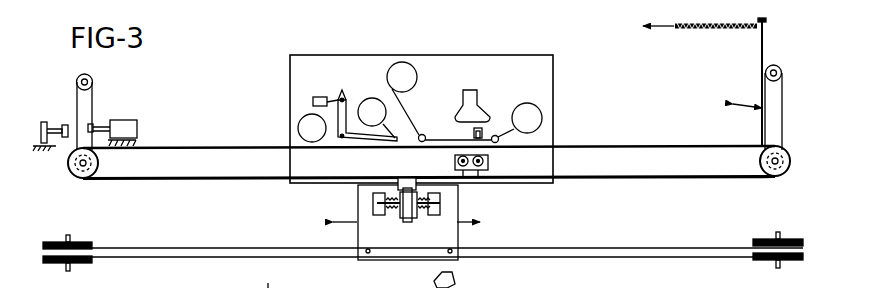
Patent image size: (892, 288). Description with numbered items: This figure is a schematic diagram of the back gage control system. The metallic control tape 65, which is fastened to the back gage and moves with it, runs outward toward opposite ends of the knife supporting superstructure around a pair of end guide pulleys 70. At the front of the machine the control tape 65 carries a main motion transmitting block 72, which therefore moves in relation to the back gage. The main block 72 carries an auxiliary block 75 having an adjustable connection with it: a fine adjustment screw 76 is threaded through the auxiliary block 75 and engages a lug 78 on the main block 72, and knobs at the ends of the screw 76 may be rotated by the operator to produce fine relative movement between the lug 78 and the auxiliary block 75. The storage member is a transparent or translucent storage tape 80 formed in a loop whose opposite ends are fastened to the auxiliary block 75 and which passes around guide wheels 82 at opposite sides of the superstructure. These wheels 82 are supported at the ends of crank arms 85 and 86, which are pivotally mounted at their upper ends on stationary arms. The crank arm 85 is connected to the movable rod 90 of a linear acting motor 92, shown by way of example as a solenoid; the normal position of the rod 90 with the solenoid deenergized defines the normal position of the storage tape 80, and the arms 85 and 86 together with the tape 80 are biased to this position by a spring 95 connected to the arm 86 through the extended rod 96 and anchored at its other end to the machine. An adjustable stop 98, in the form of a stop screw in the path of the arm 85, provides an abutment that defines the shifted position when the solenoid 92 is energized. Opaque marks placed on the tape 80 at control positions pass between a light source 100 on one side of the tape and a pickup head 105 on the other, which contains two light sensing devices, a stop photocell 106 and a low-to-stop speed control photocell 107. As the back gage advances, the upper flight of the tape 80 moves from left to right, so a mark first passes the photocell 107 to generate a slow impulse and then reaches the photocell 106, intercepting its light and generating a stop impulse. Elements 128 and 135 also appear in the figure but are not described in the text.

The control tape 65 is at (596, 250).
The end guide pulleys 70 is at (80, 243).
The main motion transmitting block 72 is at (383, 258).
The auxiliary block 75 is at (405, 176).
The fine adjustment screw 76 is at (442, 203).
The lug 78 is at (408, 221).
The storage tape 80 is at (655, 180).
The guide wheels 82 is at (80, 178).
The crank arm 85 is at (92, 104).
The crank arm 86 is at (778, 101).
The rod 90 is at (94, 125).
The linear acting motor 92 is at (139, 130).
The spring 95 is at (718, 22).
The extended rod 96 is at (760, 50).
The adjustable stop 98 is at (70, 113).
The light source 100 is at (503, 85).
The pickup head 105 is at (497, 170).
The stop photocell 106 is at (490, 158).
The low-to-stop speed control photocell 107 is at (455, 158).
The roller 128 is at (464, 278).
The base 135 is at (301, 279).